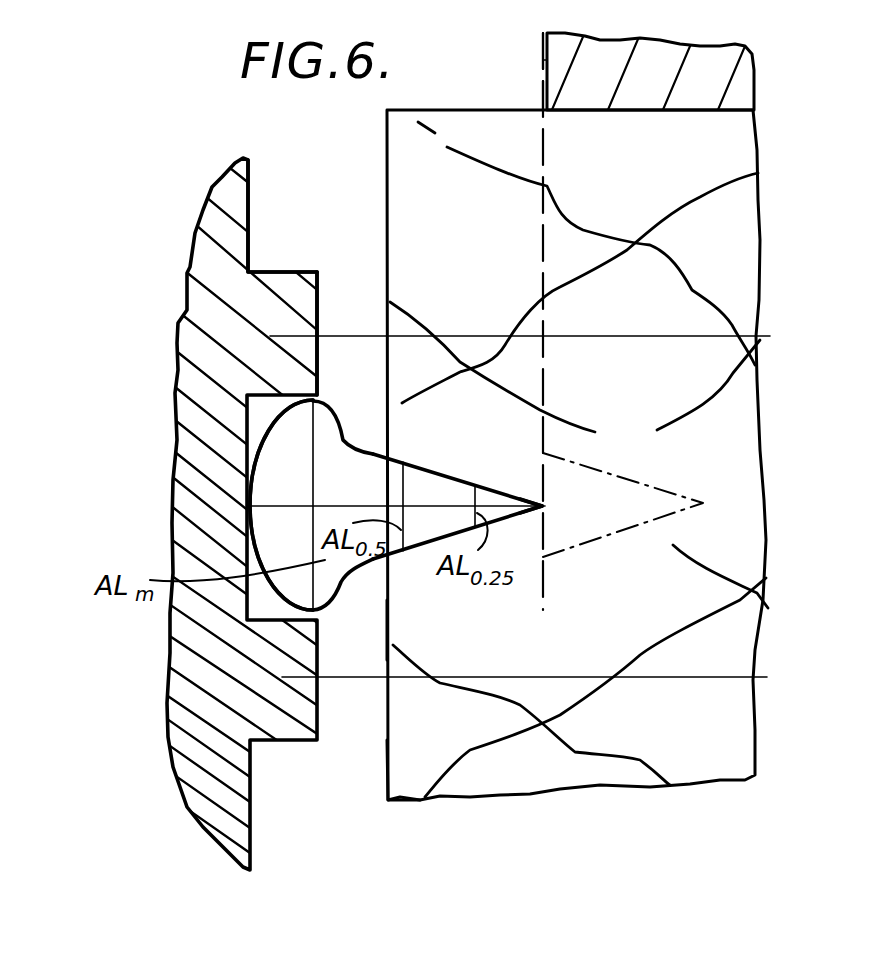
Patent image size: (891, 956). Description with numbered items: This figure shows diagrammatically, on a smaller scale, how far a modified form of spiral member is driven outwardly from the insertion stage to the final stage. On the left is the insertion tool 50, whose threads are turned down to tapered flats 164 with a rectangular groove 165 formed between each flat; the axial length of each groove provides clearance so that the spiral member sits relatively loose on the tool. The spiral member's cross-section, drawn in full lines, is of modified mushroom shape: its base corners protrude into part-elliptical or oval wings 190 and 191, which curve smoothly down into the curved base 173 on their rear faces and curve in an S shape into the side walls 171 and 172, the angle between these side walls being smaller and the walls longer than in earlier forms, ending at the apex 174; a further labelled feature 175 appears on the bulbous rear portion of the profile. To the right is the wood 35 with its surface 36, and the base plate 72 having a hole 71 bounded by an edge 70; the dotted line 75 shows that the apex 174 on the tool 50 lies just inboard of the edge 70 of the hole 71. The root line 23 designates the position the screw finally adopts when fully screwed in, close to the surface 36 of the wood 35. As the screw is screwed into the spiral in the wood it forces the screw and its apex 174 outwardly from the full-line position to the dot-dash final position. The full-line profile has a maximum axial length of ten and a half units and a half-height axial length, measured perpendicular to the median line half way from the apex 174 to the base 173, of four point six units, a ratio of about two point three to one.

The root line of the screw 23 is at (390, 628).
The wood 35 is at (760, 226).
The surface of the wood 36 is at (385, 783).
The insertion tool 50 is at (213, 184).
The edge 70 is at (541, 46).
The hole 71 is at (487, 100).
The base plate 72 is at (750, 45).
The dotted line 75 is at (543, 597).
The tapered flats 164 is at (317, 292).
The rectangular groove 165 is at (250, 210).
The side wall 171 is at (420, 467).
The side wall 172 is at (428, 541).
The base 173 is at (252, 518).
The apex 174 is at (545, 506).
The bulb end surface 175 is at (270, 503).
The wing 190 is at (334, 410).
The wing 191 is at (334, 612).